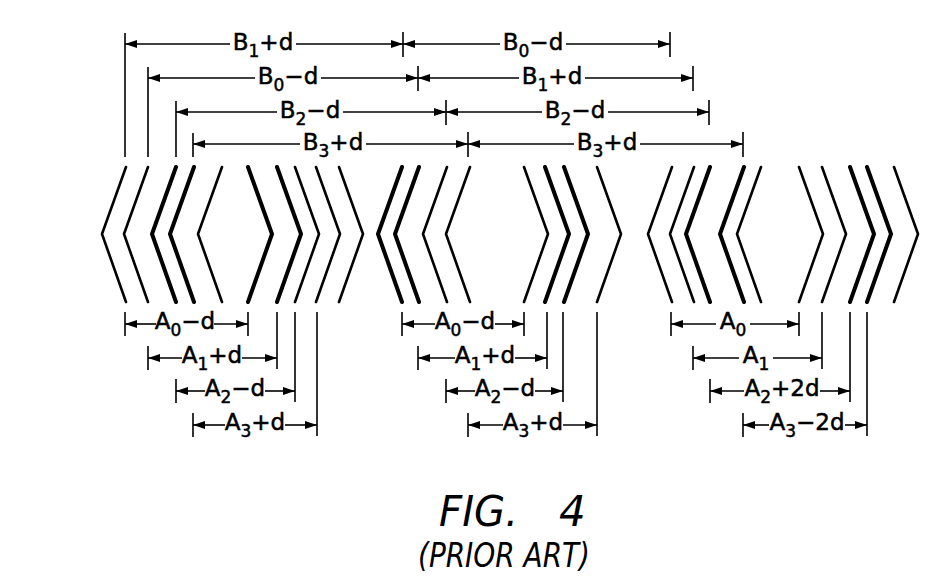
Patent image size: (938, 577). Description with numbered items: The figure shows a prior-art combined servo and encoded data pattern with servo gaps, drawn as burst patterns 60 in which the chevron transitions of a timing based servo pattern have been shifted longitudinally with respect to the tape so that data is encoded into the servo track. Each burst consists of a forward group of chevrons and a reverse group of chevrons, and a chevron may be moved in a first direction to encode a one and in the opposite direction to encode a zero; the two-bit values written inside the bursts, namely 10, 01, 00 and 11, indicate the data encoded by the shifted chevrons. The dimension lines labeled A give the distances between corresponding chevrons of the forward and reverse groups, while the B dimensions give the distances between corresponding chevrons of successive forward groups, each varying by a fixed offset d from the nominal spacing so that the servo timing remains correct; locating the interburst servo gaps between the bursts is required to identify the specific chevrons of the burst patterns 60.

The burst patterns 60 is at (87, 230).
The data bit value 10 in servo burst 10 is at (510, 234).
The data bit value 01 in servo burst 01 is at (254, 234).
The data bit value 00 in servo burst 00 is at (464, 234).
The data bit value 11 in servo burst 11 is at (641, 234).